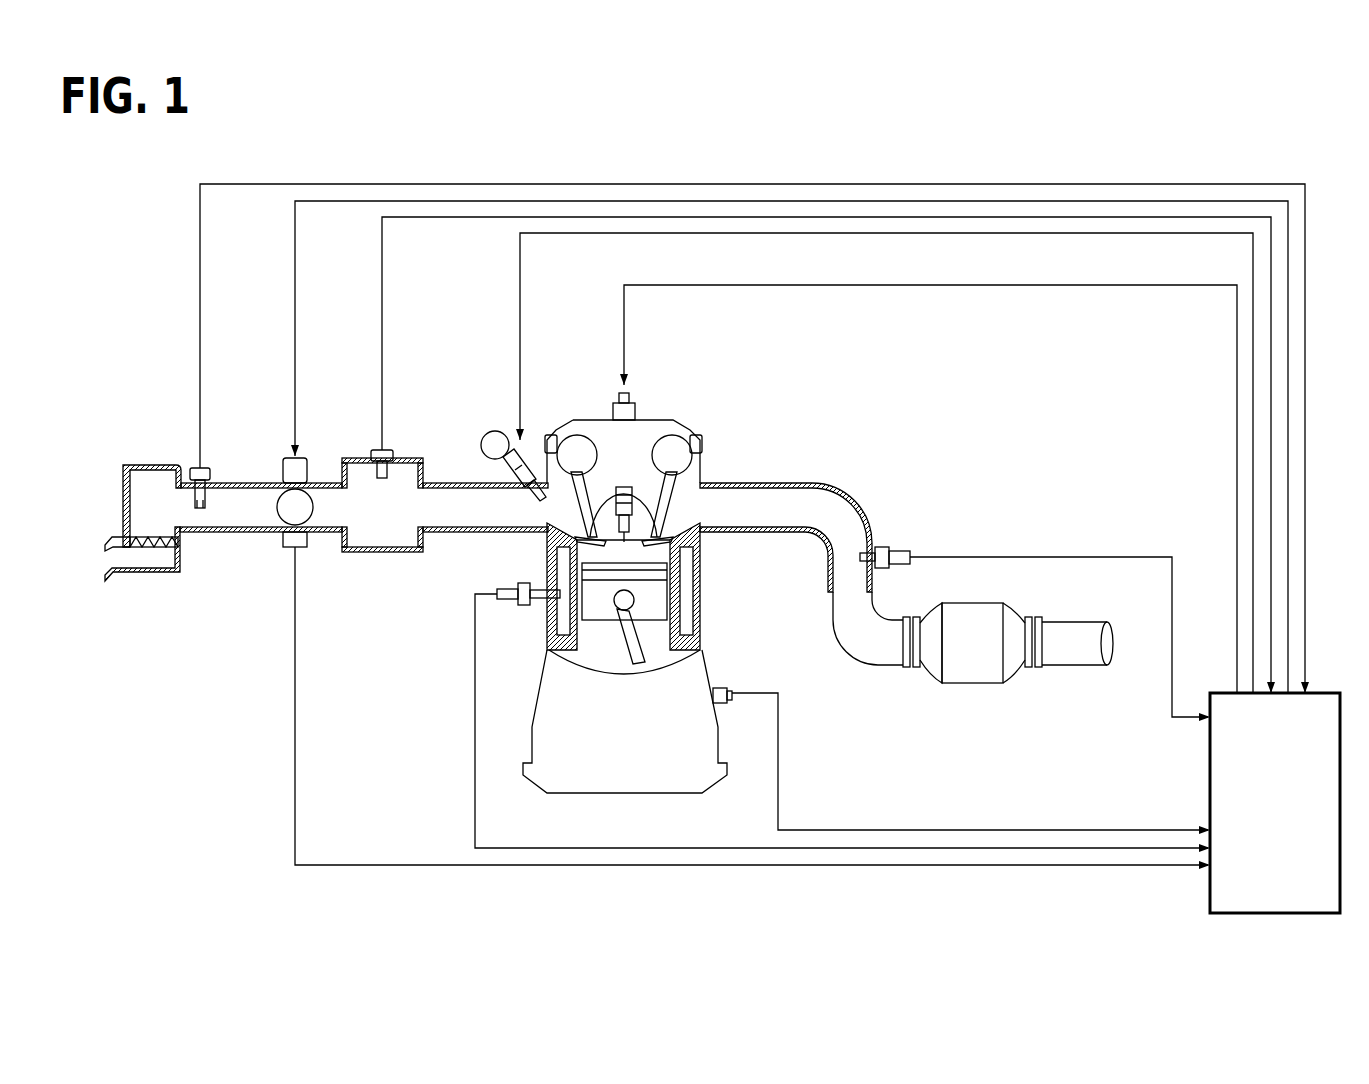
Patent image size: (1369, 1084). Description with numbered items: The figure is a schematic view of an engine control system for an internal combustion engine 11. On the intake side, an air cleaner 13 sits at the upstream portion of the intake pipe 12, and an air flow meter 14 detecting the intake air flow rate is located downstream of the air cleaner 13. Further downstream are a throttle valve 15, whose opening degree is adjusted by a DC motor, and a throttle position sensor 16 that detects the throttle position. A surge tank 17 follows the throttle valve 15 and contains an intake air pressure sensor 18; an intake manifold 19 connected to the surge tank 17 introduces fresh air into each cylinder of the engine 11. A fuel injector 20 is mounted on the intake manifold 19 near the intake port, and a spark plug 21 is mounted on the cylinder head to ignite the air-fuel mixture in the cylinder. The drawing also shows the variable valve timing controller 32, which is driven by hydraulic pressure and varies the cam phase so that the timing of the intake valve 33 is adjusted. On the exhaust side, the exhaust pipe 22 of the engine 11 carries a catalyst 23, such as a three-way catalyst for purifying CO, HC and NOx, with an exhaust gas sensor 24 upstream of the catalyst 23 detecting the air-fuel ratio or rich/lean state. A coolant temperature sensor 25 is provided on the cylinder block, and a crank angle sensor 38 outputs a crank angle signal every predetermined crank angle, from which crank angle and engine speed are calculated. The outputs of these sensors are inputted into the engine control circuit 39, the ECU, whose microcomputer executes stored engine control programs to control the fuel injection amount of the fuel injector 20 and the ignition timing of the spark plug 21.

The internal combustion engine 11 is at (676, 421).
The intake pipe 12 is at (244, 482).
The air cleaner 13 is at (150, 548).
The air flow meter 14 is at (190, 467).
The throttle valve 15 is at (302, 508).
The throttle position sensor 16 is at (290, 548).
The surge tank 17 is at (347, 458).
The intake air pressure sensor 18 is at (386, 450).
The intake manifold 19 is at (446, 482).
The fuel injector 20 is at (485, 433).
The spark plug 21 is at (640, 480).
The exhaust pipe 22 is at (810, 480).
The catalyst 23 is at (990, 603).
The exhaust gas sensor 24 is at (884, 545).
The coolant temperature sensor 25 is at (527, 608).
The variable valve timing controller 32 is at (577, 442).
The intake valve 33 is at (585, 538).
The crank angle sensor 38 is at (722, 690).
The engine control circuit 39 is at (1210, 890).